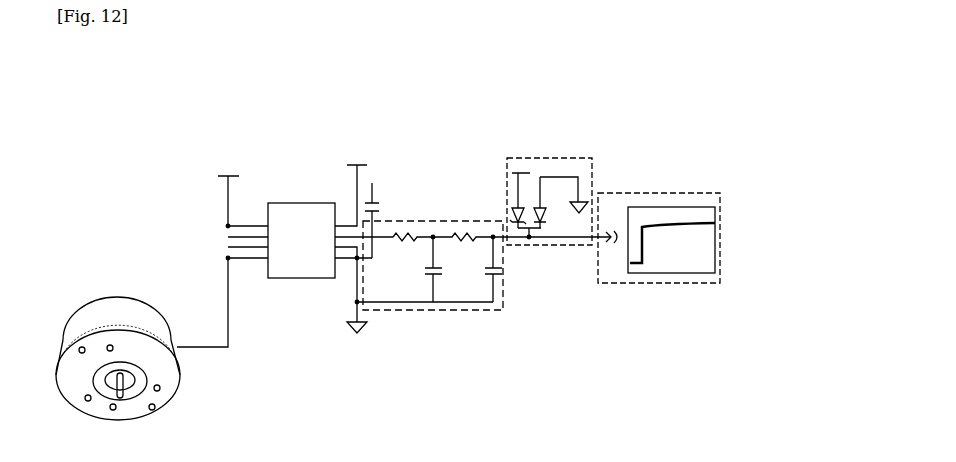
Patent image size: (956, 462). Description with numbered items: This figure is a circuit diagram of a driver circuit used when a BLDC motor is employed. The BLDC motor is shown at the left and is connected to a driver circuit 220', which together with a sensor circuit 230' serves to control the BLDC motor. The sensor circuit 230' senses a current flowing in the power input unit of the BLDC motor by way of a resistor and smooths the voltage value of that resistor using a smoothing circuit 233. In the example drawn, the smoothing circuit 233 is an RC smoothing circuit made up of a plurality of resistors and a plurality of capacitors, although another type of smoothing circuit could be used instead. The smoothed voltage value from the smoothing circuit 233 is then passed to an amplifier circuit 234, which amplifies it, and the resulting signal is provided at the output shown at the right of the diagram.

The driver circuit 220' is at (298, 236).
The sensor circuit 230' is at (527, 170).
The smoothing circuit 233 is at (440, 221).
The amplifier circuit 234 is at (547, 158).